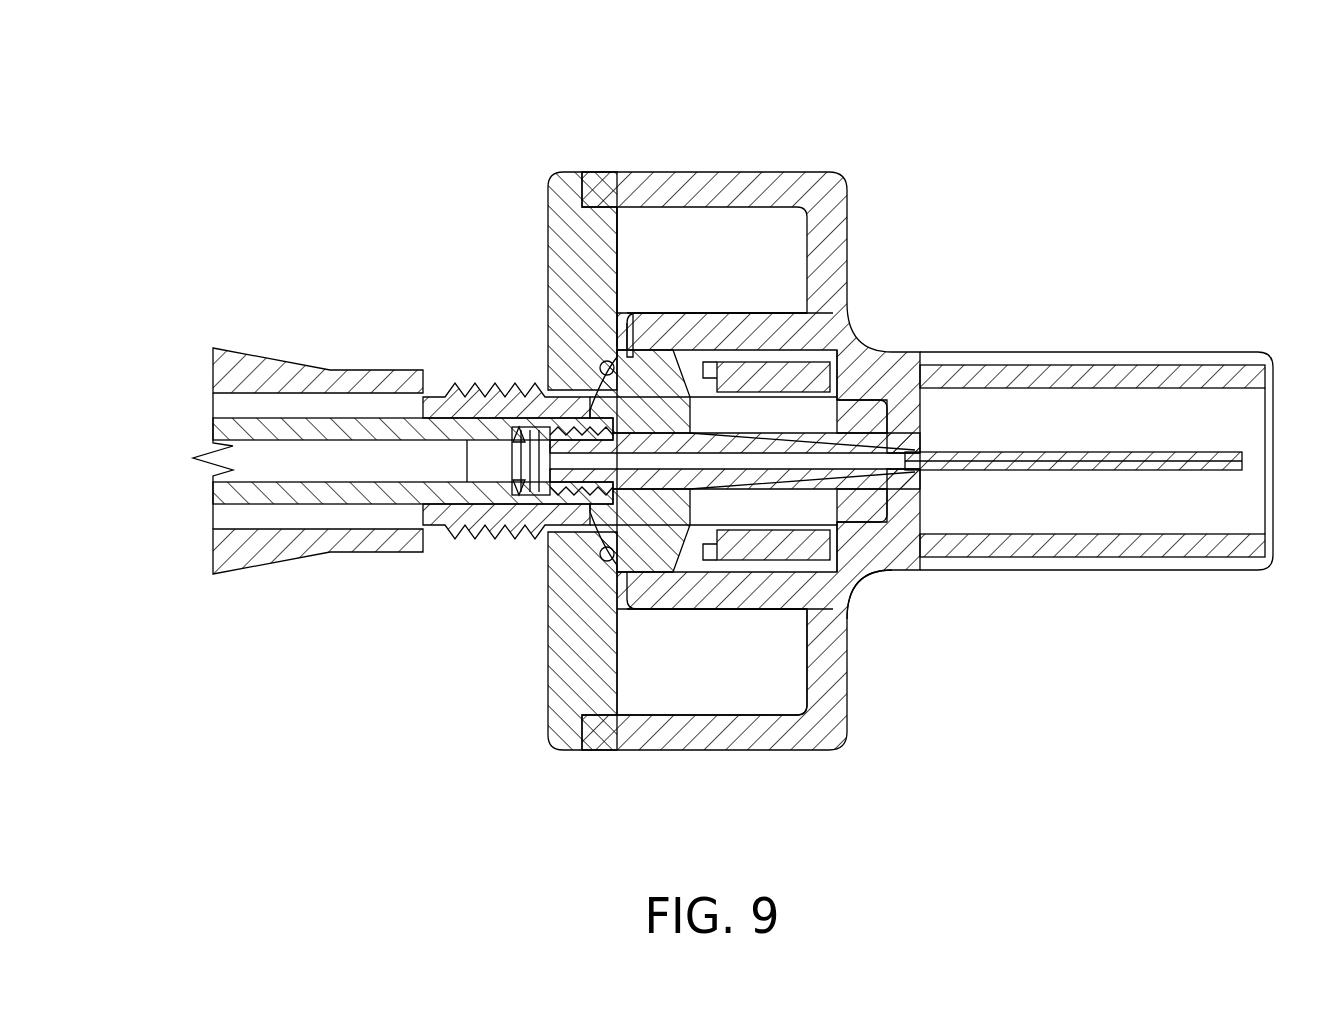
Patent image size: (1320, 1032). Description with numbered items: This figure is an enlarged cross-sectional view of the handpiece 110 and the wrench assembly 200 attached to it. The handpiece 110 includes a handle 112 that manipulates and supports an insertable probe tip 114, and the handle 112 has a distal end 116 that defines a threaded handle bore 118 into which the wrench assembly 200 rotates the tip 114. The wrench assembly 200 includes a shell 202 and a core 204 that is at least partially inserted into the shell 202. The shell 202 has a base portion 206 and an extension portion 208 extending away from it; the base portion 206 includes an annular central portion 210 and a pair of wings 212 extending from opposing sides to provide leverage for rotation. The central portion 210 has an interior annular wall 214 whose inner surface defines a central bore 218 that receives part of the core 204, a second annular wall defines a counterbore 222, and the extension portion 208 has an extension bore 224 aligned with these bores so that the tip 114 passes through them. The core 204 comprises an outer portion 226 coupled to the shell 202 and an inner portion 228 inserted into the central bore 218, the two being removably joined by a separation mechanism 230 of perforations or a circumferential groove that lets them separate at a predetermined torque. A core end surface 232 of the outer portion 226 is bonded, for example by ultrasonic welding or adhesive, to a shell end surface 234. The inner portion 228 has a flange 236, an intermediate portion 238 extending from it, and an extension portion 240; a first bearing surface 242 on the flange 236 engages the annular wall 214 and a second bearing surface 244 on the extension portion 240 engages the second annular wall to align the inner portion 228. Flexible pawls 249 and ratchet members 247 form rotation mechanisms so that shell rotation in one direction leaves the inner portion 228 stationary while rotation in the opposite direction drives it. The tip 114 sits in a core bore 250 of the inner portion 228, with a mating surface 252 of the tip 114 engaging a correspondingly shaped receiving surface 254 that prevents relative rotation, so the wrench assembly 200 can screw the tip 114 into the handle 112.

The handpiece 110 is at (288, 186).
The handle 112 is at (270, 370).
The probe tip 114 is at (556, 497).
The distal end 116 is at (452, 560).
The threaded handle bore 118 is at (562, 505).
The wrench assembly 200 is at (1093, 112).
The shell 202 is at (1113, 290).
The core 204 is at (525, 208).
The base portion 206 is at (596, 770).
The extension portion 208 is at (1128, 377).
The central portion 210 is at (868, 606).
The wings 212 is at (625, 733).
The interior annular wall 214 is at (768, 592).
The central bore 218 is at (690, 590).
The counterbore 222 is at (884, 537).
The extension bore 224 is at (1163, 425).
The outer portion 226 is at (548, 275).
The inner portion 228 is at (602, 360).
The separation mechanism 230 is at (607, 545).
The core end surface 232 is at (585, 190).
The shell end surface 234 is at (578, 733).
The flange 236 is at (607, 374).
The intermediate portion 238 is at (683, 397).
The extension portion 240 is at (833, 375).
The first bearing surface 242 is at (630, 333).
The second bearing surface 244 is at (867, 400).
The ratchet members 247 is at (808, 580).
The pawl 249 is at (733, 372).
The core bore 250 is at (807, 425).
The mating surface 252 is at (640, 568).
The receiving surface 254 is at (613, 345).